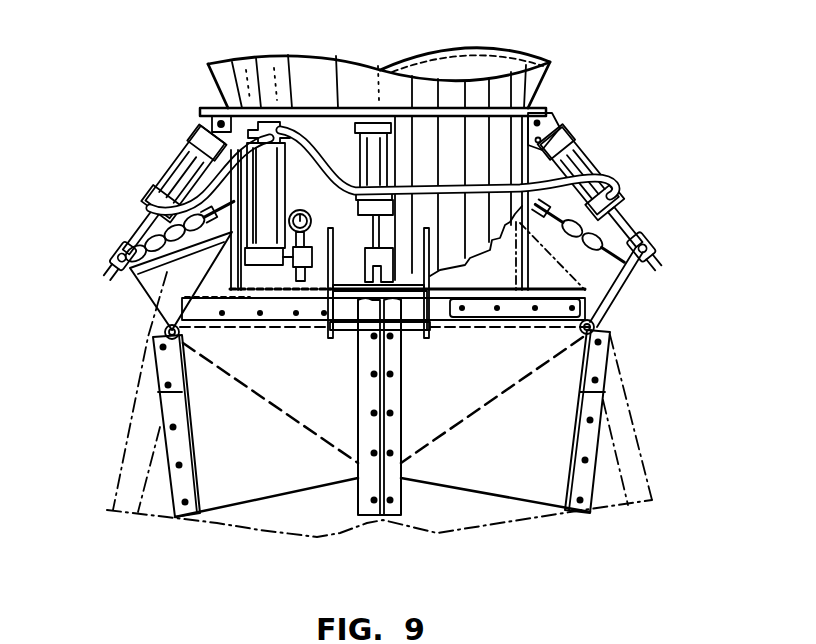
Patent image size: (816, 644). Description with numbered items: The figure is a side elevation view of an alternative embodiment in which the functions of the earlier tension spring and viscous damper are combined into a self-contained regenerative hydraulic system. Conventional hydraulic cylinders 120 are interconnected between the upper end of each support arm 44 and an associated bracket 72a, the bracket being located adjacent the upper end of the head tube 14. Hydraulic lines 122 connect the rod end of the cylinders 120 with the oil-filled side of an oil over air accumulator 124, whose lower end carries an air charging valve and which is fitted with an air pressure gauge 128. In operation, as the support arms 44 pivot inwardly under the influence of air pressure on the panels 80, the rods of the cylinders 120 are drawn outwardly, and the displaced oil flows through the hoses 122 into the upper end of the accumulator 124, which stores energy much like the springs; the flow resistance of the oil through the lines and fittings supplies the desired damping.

The head tube 14 is at (548, 178).
The support arm 44 is at (158, 416).
The bracket 72a is at (208, 122).
The panel 80 is at (245, 488).
The hydraulic cylinder 120 is at (173, 173).
The hydraulic line 122 is at (598, 178).
The oil over air accumulator 124 is at (273, 163).
The air pressure gauge 128 is at (326, 195).